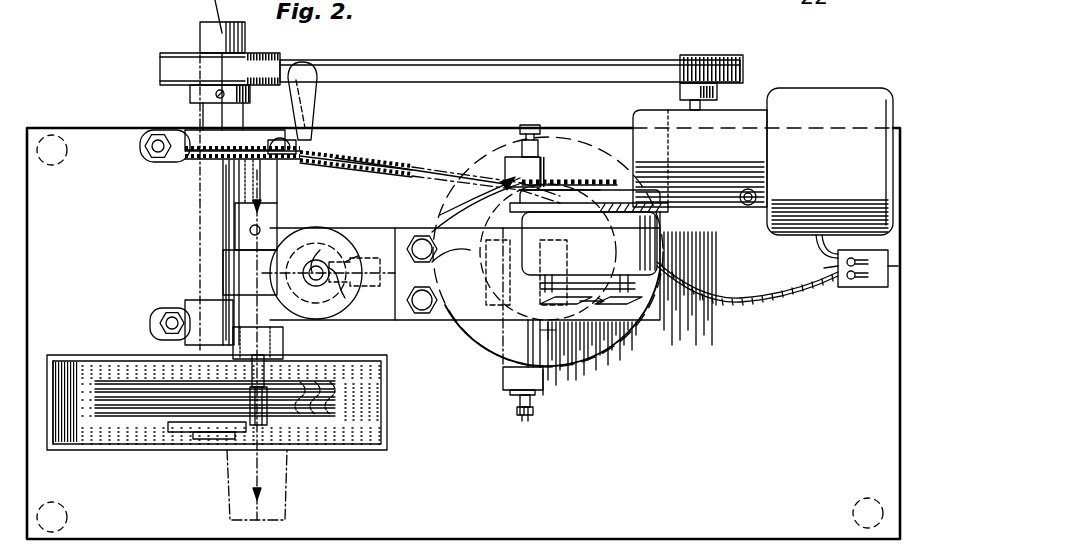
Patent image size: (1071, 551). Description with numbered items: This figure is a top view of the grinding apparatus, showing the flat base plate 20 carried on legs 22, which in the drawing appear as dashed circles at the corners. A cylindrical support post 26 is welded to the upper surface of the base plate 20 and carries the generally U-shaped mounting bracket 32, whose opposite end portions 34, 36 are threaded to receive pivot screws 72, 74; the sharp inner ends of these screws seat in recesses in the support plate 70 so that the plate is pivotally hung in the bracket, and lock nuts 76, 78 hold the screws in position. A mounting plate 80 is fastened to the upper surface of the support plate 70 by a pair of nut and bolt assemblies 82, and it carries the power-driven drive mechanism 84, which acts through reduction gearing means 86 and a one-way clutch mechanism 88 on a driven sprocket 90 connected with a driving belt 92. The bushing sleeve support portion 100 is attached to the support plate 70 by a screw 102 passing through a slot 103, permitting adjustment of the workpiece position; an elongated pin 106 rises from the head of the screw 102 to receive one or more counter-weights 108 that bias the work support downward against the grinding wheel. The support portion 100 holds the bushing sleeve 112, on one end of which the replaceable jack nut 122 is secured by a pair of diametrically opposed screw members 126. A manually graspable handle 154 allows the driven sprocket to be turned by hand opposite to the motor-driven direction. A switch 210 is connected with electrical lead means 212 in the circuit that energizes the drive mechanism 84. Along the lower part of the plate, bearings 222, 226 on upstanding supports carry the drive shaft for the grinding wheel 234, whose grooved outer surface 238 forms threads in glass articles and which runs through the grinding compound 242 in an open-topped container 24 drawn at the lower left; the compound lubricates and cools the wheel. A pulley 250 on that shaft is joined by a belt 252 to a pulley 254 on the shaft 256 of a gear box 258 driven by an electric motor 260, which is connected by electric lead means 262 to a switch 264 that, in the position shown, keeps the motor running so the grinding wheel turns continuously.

The base plate 20 is at (767, 471).
The legs 22 is at (63, 138).
The tray 24 is at (161, 452).
The support post 26 is at (600, 360).
The mounting bracket 32 is at (500, 378).
The end portion 34 is at (545, 172).
The end portion 36 is at (550, 395).
The support plate 70 is at (388, 322).
The pivot screw 72 is at (541, 130).
The pivot screw 74 is at (536, 420).
The lock nut 76 is at (512, 160).
The lock nut 78 is at (515, 397).
The mounting plate 80 is at (432, 288).
The nut and bolt assemblies 82 is at (437, 256).
The drive mechanism 84 is at (668, 285).
The reduction gearing means 86 is at (668, 218).
The one-way clutch mechanism 88 is at (495, 184).
The driven sprocket 90 is at (597, 178).
The driving belt 92 is at (396, 156).
The bushing sleeve support portion 100 is at (220, 268).
The screw 102 is at (310, 290).
The slot 103 is at (359, 290).
The pin 106 is at (322, 250).
The counter-weights 108 is at (360, 252).
The bushing sleeve 112 is at (232, 246).
The jack nut 122 is at (244, 215).
The screw members 126 is at (249, 230).
The handle 154 is at (319, 100).
The switch 210 is at (855, 288).
The electrical lead means 212 is at (800, 303).
The bearing 222 is at (183, 160).
The bearing 226 is at (186, 313).
The grinding wheel 234 is at (322, 432).
The grooved outer surface 238 is at (337, 416).
The grinding compound 242 is at (103, 440).
The pulley 250 is at (181, 55).
The belt 252 is at (541, 62).
The pulley 254 is at (740, 52).
The shaft 256 is at (705, 102).
The gear box 258 is at (725, 152).
The electric motor 260 is at (860, 166).
The electric lead means 262 is at (816, 250).
The switch 264 is at (838, 272).